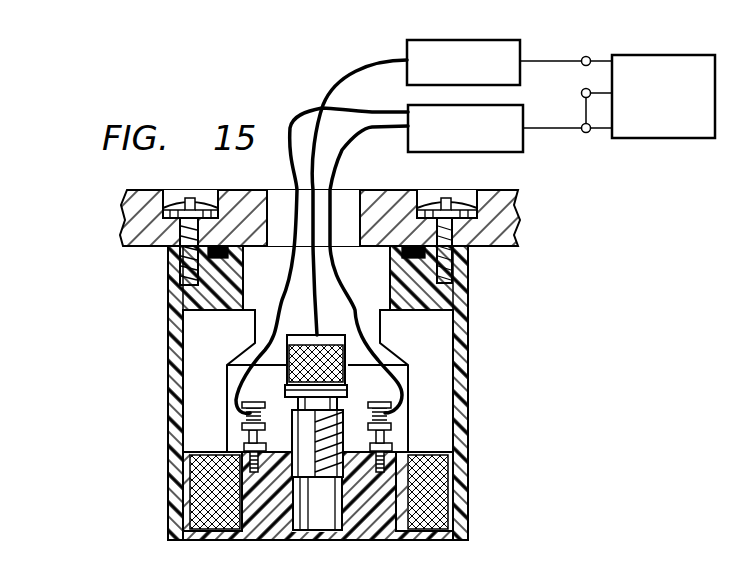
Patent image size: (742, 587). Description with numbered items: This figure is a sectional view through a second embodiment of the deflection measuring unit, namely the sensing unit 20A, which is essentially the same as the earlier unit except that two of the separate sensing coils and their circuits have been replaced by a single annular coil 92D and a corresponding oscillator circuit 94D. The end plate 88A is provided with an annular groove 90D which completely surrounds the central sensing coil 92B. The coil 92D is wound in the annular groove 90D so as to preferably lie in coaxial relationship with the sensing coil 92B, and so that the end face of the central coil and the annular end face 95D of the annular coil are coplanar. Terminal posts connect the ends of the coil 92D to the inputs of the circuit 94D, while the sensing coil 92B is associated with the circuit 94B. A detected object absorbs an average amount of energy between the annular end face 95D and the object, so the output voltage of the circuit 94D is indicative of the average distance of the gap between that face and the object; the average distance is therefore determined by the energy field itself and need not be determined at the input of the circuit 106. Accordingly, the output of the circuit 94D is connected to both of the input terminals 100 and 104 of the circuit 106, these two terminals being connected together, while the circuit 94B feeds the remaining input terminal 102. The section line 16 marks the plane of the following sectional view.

The sensing unit 20A is at (471, 332).
The end plate 88A is at (253, 541).
The annular groove 90D is at (198, 483).
The annular coil 92D is at (433, 478).
The sensing coil 92B is at (322, 508).
The annular end face 95D is at (417, 541).
The circuit 94B is at (463, 62).
The oscillator circuit 94D is at (465, 128).
The circuit 106 is at (663, 96).
The input terminal 102 is at (583, 66).
The input terminal 104 is at (582, 98).
The input terminal 100 is at (586, 133).
The section line 16- 16 is at (115, 524).